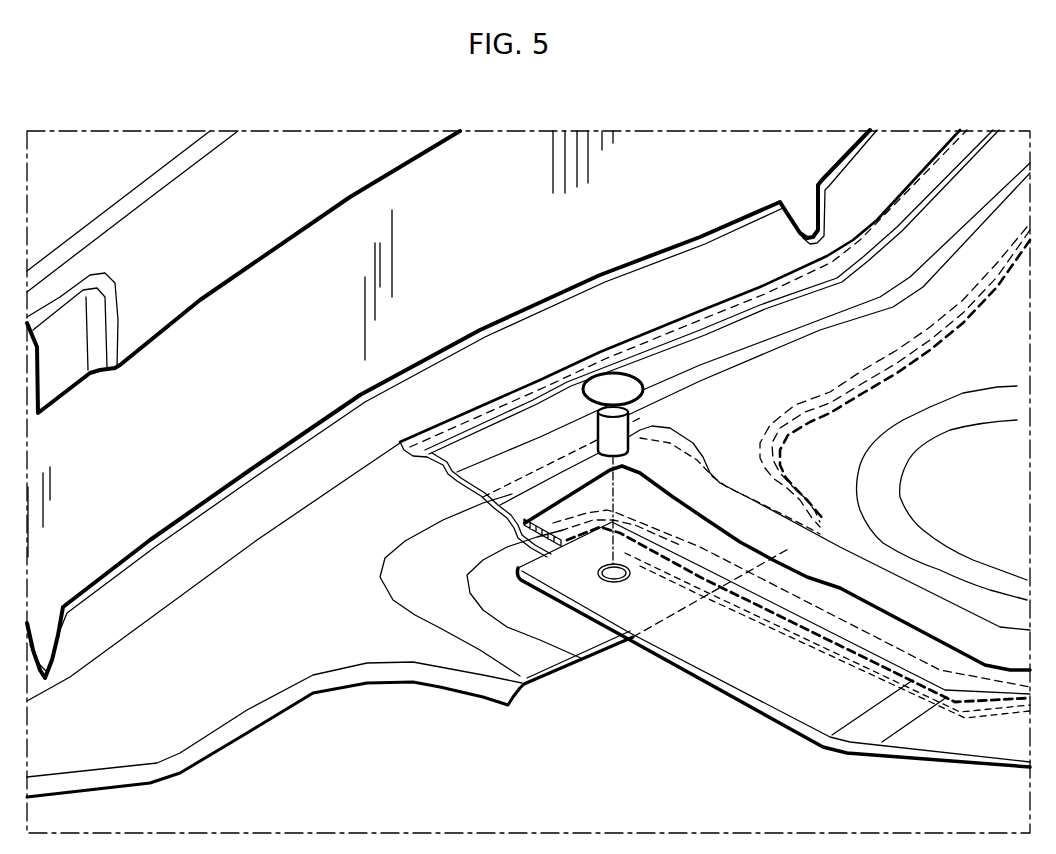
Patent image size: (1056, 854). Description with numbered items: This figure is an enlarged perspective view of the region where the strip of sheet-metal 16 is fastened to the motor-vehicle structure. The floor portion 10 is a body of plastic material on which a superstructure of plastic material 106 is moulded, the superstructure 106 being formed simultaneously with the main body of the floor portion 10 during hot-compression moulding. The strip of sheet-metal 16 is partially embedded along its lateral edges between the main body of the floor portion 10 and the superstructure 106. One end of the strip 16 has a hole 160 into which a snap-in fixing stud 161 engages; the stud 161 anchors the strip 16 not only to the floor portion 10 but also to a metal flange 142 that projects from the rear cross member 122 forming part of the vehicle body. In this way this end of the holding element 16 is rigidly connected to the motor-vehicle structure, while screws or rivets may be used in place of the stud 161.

The rear cross member 122 is at (91, 209).
The floor portion 10 is at (406, 473).
The snap-in fixing stud 161 is at (640, 408).
The hole 160 is at (614, 583).
The strip of sheet-metal 16 is at (768, 732).
The superstructure of plastic material 106 is at (840, 593).
The metal flange 142 is at (288, 675).